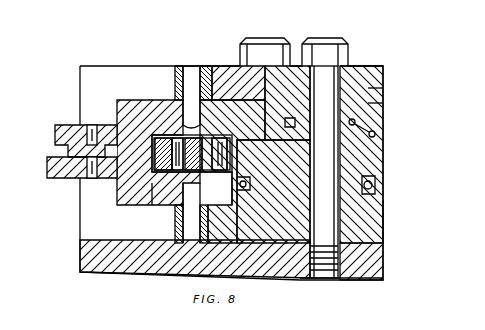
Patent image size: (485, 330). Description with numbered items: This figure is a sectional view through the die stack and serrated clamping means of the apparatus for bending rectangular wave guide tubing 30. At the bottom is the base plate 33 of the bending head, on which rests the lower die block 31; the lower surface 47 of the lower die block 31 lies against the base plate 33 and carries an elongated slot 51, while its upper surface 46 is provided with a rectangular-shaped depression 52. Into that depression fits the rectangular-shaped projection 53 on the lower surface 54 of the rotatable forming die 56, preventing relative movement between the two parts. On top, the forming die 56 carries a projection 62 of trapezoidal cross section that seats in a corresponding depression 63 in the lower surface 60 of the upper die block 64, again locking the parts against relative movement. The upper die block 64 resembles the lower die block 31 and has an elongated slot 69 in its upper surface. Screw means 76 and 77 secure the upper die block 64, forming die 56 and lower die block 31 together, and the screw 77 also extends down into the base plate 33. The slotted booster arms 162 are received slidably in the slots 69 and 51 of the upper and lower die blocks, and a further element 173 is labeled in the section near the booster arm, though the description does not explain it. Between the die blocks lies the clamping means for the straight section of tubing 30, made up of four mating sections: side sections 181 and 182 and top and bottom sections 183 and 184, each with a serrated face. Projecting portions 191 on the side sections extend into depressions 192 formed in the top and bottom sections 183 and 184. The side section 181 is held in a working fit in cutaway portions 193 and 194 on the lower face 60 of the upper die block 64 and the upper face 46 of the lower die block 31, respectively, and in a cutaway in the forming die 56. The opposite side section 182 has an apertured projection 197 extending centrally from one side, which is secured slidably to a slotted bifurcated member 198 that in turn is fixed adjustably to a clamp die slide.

The rectangular wave guide tubing 30 is at (132, 118).
The lower die block 31 is at (392, 226).
The base plate 33 is at (385, 258).
The upper surface of the lower die block 46 is at (376, 190).
The lower surface of the lower die block 47 is at (384, 240).
The elongated slot 51 is at (145, 241).
The rectangular-shaped depression 52 is at (384, 212).
The rectangular-shaped projection 53 is at (273, 191).
The lower surface of the forming die 54 is at (376, 184).
The rotatable forming die 56 is at (387, 150).
The lower surface of the upper die block 60 is at (383, 130).
The projection 62 is at (384, 103).
The rectangular-shaped depression 63 is at (384, 86).
The upper die block 64 is at (360, 66).
The elongated slot 69 is at (178, 66).
The screw means 76 is at (262, 38).
The screw means 77 is at (340, 38).
The slotted booster arm 162 is at (204, 68).
The rod 173 is at (189, 66).
The side section 181 is at (272, 101).
The side section 182 is at (118, 195).
The top section 183 is at (222, 104).
The bottom section 184 is at (203, 224).
The projecting portion 191 is at (120, 102).
The depression 192 is at (175, 103).
The cutaway portion 193 is at (270, 121).
The cutaway portion 194 is at (262, 242).
The apertured projection 197 is at (70, 147).
The slotted bifurcated member 198 is at (56, 128).